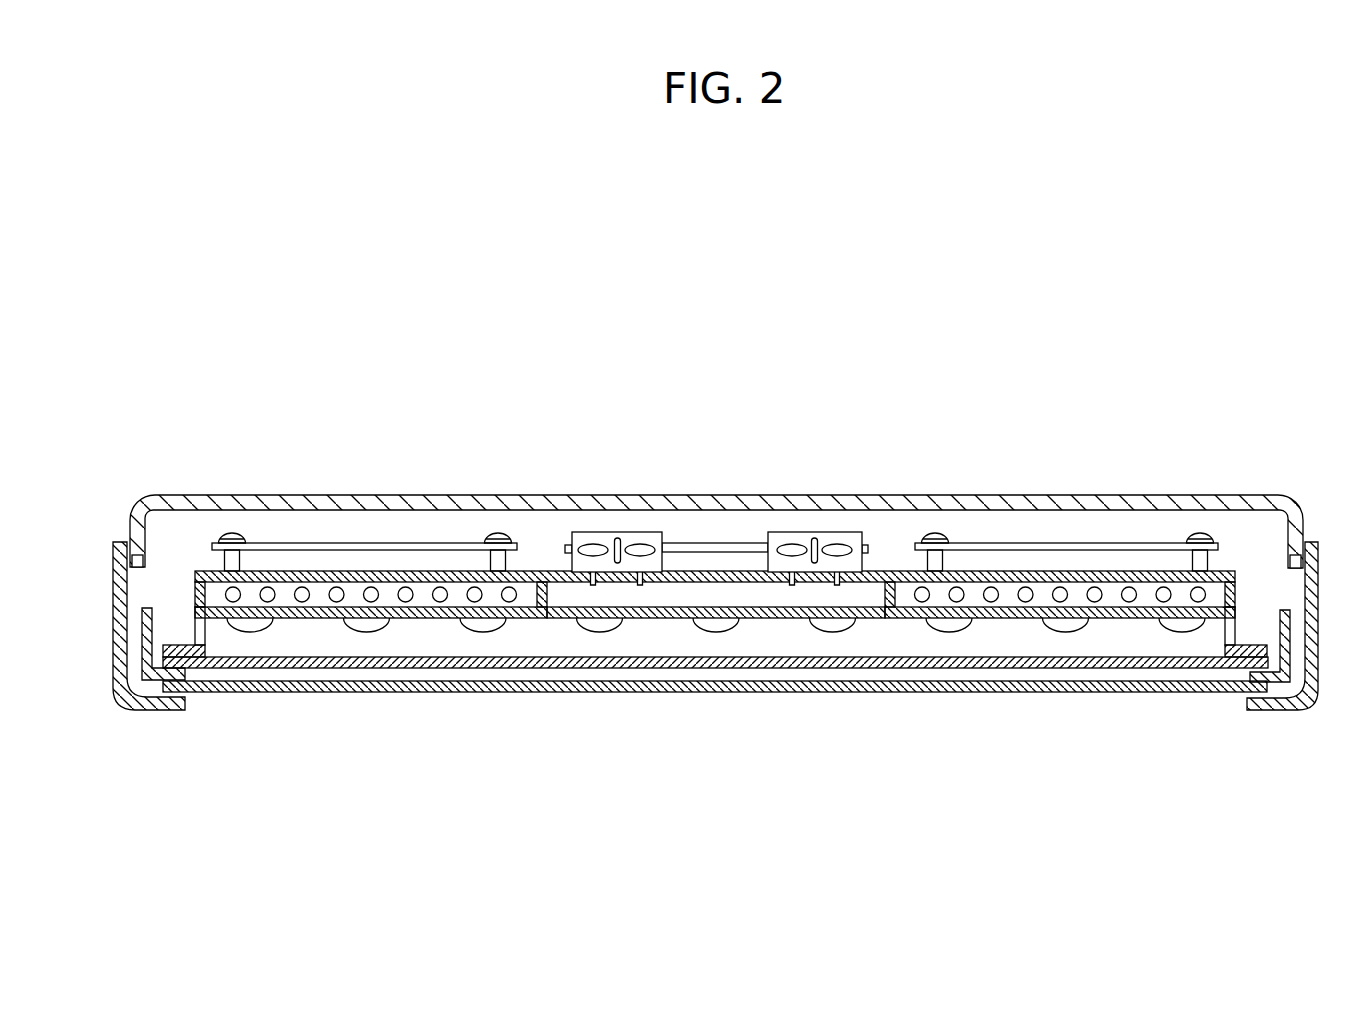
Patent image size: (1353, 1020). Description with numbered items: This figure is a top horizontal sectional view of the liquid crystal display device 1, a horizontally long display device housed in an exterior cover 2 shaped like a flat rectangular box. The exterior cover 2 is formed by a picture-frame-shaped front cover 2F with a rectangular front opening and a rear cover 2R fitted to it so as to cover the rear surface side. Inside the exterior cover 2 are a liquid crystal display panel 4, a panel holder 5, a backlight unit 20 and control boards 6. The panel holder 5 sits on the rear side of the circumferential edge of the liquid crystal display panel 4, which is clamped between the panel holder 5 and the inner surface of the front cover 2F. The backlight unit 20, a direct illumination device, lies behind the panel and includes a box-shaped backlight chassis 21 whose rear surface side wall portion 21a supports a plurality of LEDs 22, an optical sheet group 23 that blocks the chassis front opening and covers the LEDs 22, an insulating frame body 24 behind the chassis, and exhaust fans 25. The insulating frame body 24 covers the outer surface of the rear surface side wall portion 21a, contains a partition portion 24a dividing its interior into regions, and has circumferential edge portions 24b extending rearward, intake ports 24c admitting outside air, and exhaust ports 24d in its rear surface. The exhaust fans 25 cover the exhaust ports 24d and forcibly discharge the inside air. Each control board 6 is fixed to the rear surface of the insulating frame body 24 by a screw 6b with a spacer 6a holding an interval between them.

The liquid crystal display device 1 is at (310, 213).
The exterior cover 2 is at (225, 395).
The front cover 2F is at (113, 540).
The rear cover 2R is at (200, 495).
The liquid crystal display panel 4 is at (205, 693).
The panel holder 5 is at (148, 680).
The control board 6 is at (715, 482).
The spacer 6a is at (243, 562).
The screw 6b is at (236, 531).
The backlight unit 20 is at (598, 673).
The backlight chassis 21 is at (715, 594).
The rear surface side wall portion 21a is at (713, 606).
The LED 22 is at (250, 633).
The optical sheet group 23 is at (718, 669).
The insulating frame body 24 is at (702, 594).
The partition portion 24a is at (545, 596).
The circumferential edge portion 24b is at (195, 580).
The intake port 24c is at (302, 603).
The exhaust port 24d is at (648, 581).
The exhaust fan 25 is at (613, 532).